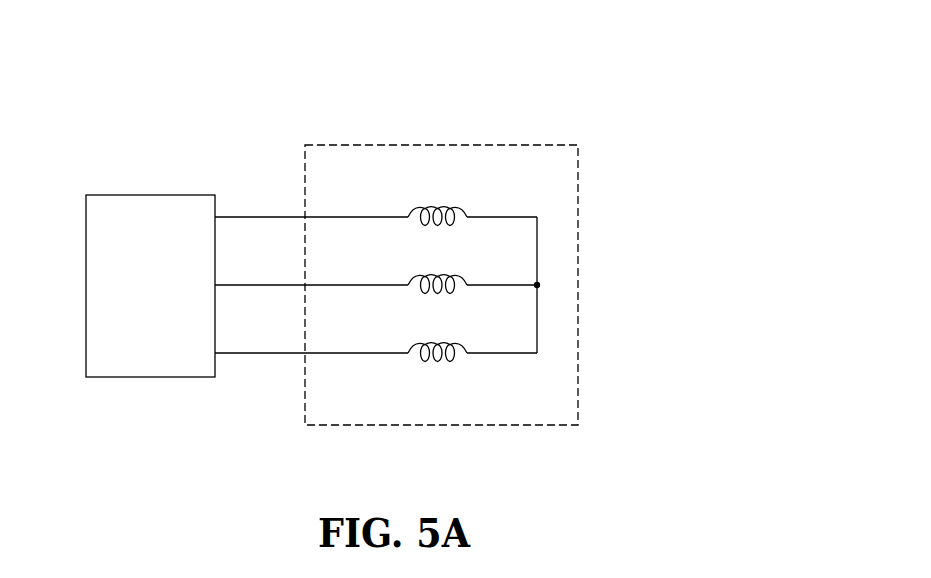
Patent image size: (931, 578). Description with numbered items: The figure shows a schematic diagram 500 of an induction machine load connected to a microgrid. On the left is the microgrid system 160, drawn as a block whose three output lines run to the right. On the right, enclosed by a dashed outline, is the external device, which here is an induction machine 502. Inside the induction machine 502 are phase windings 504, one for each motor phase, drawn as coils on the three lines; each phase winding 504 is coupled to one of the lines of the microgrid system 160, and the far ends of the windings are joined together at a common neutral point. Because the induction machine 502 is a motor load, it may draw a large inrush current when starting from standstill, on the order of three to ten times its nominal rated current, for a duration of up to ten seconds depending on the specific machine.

The schematic diagram 500 is at (615, 83).
The microgrid system 160 is at (150, 195).
The induction machine 502 is at (508, 143).
The phase windings 504 is at (455, 217).